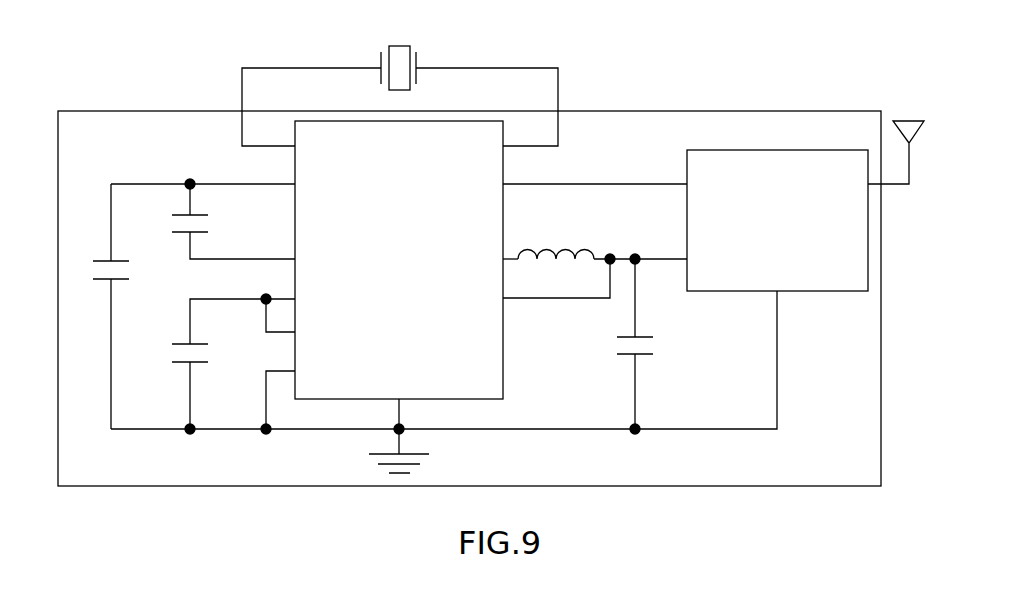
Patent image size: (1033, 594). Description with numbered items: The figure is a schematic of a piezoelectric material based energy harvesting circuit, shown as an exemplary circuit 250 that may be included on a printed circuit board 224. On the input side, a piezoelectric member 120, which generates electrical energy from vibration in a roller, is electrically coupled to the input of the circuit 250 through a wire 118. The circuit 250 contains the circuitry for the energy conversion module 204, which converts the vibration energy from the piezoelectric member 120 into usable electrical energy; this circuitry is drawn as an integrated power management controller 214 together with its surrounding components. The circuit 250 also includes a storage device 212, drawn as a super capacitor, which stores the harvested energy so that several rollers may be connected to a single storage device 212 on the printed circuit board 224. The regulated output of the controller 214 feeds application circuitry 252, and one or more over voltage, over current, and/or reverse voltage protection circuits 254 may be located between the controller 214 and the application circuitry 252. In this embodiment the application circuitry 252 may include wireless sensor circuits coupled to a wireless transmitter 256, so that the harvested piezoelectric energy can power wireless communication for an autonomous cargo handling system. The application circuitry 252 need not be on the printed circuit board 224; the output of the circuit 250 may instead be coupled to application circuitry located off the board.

The circuit 250 is at (132, 62).
The printed circuit board 224 is at (642, 117).
The piezoelectric member 120 is at (405, 60).
The wire 118 is at (558, 96).
The energy conversion module 204 is at (212, 172).
The storage device 212 is at (100, 297).
The controller 214 is at (498, 375).
The protection circuit 254 is at (588, 306).
The application circuitry 252 is at (777, 220).
The wireless transmitter 256 is at (911, 187).